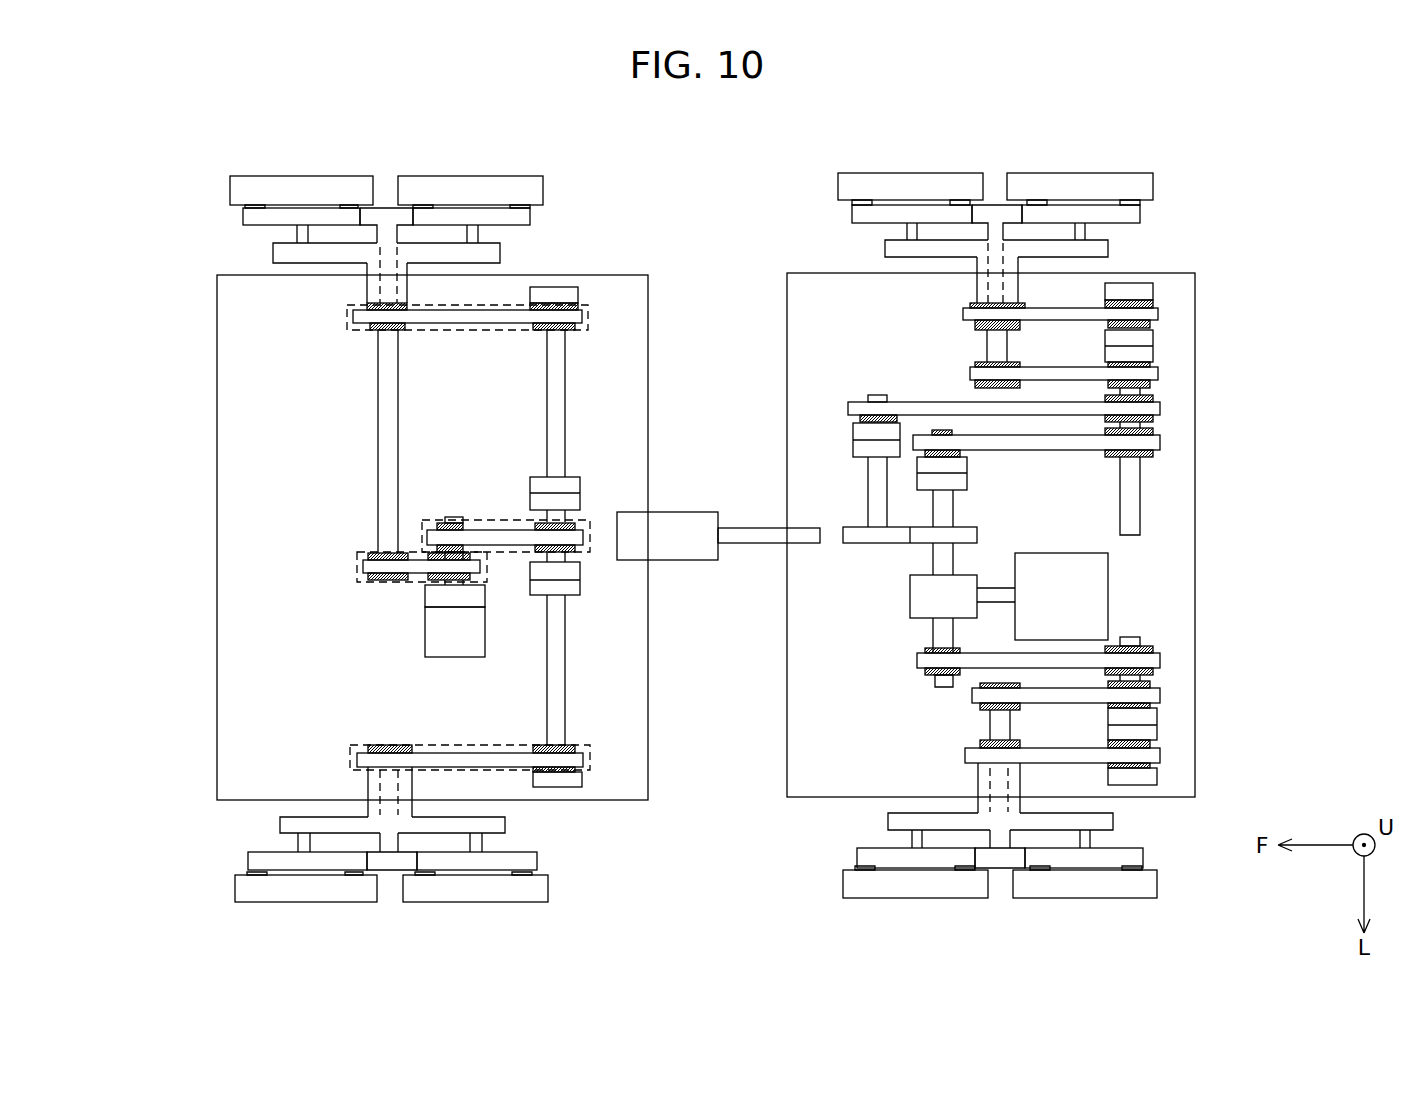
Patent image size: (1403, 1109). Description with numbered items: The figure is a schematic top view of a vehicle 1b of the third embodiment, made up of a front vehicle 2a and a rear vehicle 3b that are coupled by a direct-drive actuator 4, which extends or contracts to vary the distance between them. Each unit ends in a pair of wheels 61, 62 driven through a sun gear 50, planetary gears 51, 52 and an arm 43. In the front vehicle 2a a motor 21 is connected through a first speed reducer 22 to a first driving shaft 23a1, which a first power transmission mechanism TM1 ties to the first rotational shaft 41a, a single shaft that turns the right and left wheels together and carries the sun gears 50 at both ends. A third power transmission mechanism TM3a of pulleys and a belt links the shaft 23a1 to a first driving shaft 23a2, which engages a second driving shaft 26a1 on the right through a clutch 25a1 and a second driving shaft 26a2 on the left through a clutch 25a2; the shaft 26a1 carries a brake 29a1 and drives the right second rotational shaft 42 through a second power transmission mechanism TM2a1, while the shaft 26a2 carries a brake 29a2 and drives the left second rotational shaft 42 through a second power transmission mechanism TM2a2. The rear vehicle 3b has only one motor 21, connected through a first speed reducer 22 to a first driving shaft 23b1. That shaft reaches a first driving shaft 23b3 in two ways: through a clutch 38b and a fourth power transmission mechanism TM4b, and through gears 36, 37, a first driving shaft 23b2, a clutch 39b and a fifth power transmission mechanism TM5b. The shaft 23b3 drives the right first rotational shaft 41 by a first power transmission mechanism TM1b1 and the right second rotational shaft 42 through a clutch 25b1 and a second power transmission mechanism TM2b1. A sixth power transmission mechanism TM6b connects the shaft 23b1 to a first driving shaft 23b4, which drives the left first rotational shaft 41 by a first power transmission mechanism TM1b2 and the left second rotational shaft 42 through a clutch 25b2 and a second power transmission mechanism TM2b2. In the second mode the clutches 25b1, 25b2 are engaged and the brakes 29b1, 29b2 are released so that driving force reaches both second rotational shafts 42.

The front vehicle 2a is at (584, 167).
The rear vehicle 3b is at (813, 174).
The vehicle 1b is at (1305, 127).
The wheel 62 is at (272, 185).
The wheel 61 is at (500, 185).
The sun gear 50 is at (387, 215).
The planetary gear 52 is at (243, 216).
The planetary gear 51 is at (530, 216).
The second rotational shaft 42 is at (367, 270).
The arm 43 is at (492, 253).
The first rotational shaft 41a is at (378, 432).
The first rotational shaft 41 is at (985, 345).
The second power transmission mechanism TM2a1 is at (347, 320).
The brake 29a1 is at (578, 295).
The second driving shaft 26a1 is at (565, 408).
The clutch 25a1 is at (580, 500).
The first driving shaft 23a2 is at (565, 520).
The third power transmission mechanism TM3a is at (422, 537).
The first driving shaft 23a1 is at (453, 522).
The first power transmission mechanism TM1 is at (357, 567).
The first speed reducer 22 is at (425, 600).
The motor 21 is at (425, 633).
The clutch 25a2 is at (580, 588).
The direct-drive actuator 4 is at (697, 552).
The gear 37 is at (860, 546).
The gear 36 is at (915, 546).
The second driving shaft 26a2 is at (565, 688).
The second power transmission mechanism TM2a2 is at (350, 757).
The brake 29a2 is at (582, 780).
The brake 29b1 is at (1153, 290).
The second power transmission mechanism TM2b1 is at (1177, 317).
The clutch 25b1 is at (1153, 356).
The first power transmission mechanism TM1b1 is at (1177, 378).
The clutch 39b is at (853, 440).
The fifth power transmission mechanism TM5b is at (1177, 413).
The clutch 38b is at (917, 473).
The first driving shaft 23b3 is at (1157, 427).
The fourth power transmission mechanism TM4b is at (1174, 450).
The first driving shaft 23b2 is at (868, 490).
The first driving shaft 23b1 is at (933, 632).
The sixth power transmission mechanism TM6b is at (1177, 662).
The first driving shaft 23b4 is at (1157, 642).
The first power transmission mechanism TM1b2 is at (1177, 700).
The clutch 25b2 is at (1157, 735).
The second power transmission mechanism TM2b2 is at (1175, 762).
The brake 29b2 is at (1157, 778).